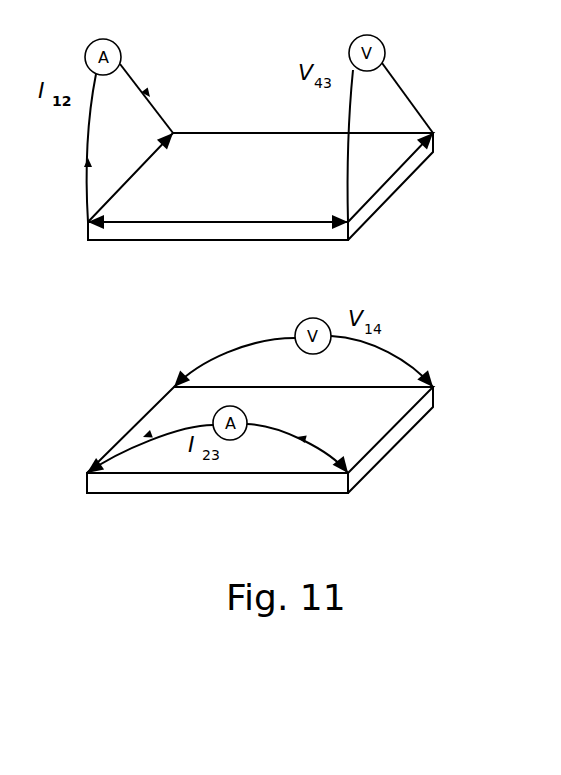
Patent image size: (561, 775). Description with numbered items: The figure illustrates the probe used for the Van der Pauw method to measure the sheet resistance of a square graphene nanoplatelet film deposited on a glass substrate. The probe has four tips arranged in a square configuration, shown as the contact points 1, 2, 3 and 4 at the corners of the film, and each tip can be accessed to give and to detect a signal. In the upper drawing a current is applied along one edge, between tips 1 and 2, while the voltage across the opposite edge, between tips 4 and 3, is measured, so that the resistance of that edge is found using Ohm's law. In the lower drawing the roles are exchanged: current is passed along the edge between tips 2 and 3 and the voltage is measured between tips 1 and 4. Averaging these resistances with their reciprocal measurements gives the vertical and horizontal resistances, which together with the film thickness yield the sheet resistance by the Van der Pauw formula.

The probe tip 1 is at (174, 248).
The probe tip 2 is at (80, 344).
The probe tip 3 is at (336, 331).
The probe tip 4 is at (432, 243).